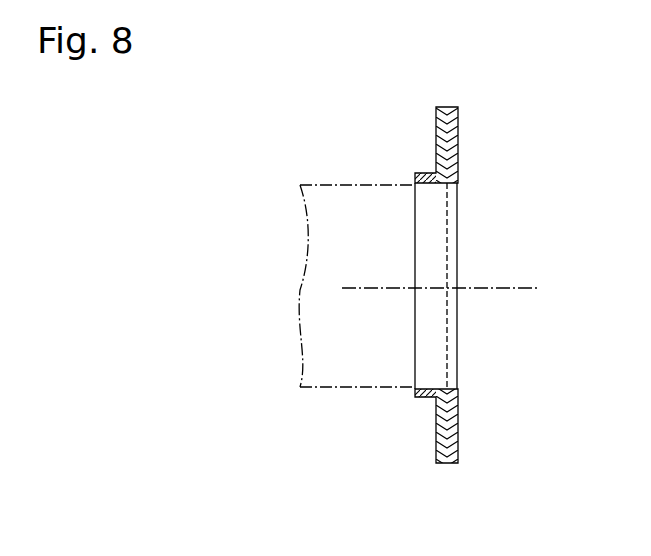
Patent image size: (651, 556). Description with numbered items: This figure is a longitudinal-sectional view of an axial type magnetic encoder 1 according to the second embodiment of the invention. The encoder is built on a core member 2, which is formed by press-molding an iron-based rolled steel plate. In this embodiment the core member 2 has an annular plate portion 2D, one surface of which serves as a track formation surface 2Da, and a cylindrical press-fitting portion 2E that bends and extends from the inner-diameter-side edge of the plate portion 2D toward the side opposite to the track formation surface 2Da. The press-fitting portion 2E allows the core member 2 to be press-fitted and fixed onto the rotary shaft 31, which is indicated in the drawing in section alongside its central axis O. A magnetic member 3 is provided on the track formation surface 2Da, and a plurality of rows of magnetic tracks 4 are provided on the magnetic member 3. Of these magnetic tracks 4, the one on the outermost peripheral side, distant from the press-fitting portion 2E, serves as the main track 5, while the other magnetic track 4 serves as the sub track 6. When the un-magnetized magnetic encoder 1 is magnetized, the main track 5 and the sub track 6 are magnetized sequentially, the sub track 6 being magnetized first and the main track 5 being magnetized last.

The magnetic encoder 1 is at (403, 305).
The core member 2 is at (403, 318).
The annular plate portion 2D is at (430, 402).
The track formation surface 2Da is at (458, 440).
The cylindrical press-fitting portion 2E is at (427, 388).
The magnetic member 3 is at (457, 422).
The magnetic tracks 4 is at (476, 143).
The main track 5 is at (462, 107).
The sub track 6 is at (467, 163).
The rotary shaft 31 is at (335, 363).
The axis O is at (456, 291).